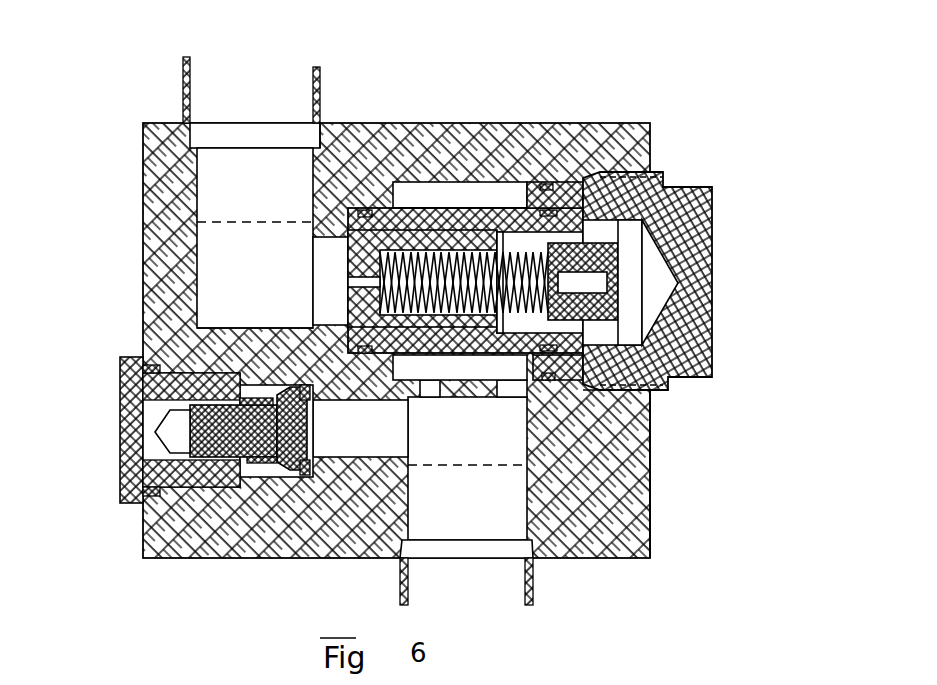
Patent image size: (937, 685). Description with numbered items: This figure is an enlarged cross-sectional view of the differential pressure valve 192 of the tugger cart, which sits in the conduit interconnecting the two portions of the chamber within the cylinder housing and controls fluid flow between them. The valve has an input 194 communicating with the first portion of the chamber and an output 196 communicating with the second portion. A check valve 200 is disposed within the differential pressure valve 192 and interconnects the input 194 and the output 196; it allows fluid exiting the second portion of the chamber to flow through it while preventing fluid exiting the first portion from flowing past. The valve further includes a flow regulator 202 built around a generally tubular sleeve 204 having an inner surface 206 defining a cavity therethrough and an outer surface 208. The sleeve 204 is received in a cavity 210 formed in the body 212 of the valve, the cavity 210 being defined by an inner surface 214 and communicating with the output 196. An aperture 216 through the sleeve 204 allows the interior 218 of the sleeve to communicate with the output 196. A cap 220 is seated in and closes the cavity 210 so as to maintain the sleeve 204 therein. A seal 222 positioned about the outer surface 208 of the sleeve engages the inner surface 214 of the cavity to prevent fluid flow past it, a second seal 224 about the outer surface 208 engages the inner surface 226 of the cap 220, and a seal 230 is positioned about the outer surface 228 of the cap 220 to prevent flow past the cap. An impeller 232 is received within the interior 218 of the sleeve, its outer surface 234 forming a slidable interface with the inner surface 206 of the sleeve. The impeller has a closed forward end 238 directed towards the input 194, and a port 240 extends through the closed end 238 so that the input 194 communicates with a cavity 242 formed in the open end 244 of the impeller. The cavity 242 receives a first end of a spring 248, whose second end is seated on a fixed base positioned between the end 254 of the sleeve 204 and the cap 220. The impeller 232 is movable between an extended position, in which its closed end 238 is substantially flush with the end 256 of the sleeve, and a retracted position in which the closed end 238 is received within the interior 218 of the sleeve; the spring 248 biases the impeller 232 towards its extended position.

The differential pressure valve 192 is at (651, 563).
The input 194 is at (232, 118).
The output 196 is at (482, 592).
The check valve 200 is at (156, 331).
The flow regulator 202 is at (445, 196).
The tubular sleeve 204 is at (476, 215).
The inner surface 206 is at (396, 192).
The outer surface 208 is at (507, 212).
The cavity 210 is at (413, 192).
The body 212 is at (633, 457).
The inner surface 214 is at (462, 200).
The aperture 216 is at (513, 212).
The interior 218 is at (560, 238).
The cap 220 is at (702, 377).
The seal 222 is at (298, 122).
The seal 224 is at (640, 388).
The inner surface 226 is at (535, 357).
The outer surface 228 is at (556, 186).
The seal 230 is at (560, 385).
The impeller 232 is at (506, 345).
The outer surface 234 is at (447, 342).
The closed forward end 238 is at (347, 282).
The port 240 is at (347, 279).
The cavity 242 is at (343, 119).
The open end 244 is at (518, 352).
The spring 248 is at (358, 320).
The end 254 is at (640, 354).
The end 256 is at (612, 232).